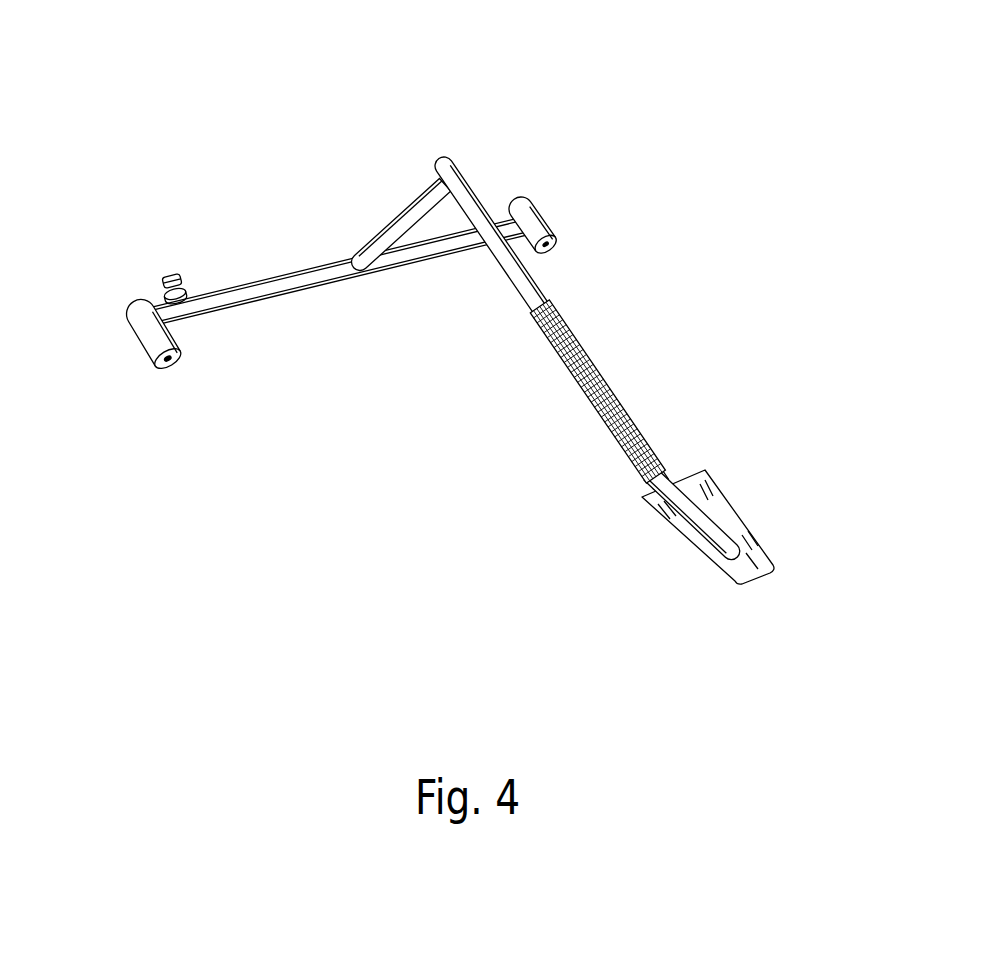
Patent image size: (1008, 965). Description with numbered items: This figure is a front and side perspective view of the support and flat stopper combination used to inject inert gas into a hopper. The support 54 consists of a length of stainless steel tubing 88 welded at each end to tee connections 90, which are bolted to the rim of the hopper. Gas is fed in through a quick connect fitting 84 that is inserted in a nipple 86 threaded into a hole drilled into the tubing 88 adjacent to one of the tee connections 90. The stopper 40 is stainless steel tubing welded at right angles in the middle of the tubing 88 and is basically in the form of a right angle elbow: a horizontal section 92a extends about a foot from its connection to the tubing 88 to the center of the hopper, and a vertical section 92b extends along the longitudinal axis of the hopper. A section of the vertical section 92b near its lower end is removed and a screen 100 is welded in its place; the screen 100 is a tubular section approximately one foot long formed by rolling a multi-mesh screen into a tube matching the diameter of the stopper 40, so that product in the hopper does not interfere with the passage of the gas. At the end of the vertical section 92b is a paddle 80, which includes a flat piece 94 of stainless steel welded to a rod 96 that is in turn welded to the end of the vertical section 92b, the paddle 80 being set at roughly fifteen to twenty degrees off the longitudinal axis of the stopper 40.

The stopper 40 is at (690, 375).
The support 54 is at (334, 240).
The paddle 80 is at (752, 530).
The quick connect fitting 84 is at (172, 278).
The nipple 86 is at (188, 293).
The tubing 88 is at (288, 276).
The tee connections 90 is at (130, 305).
The horizontal section 92a is at (405, 213).
The vertical section 92b is at (472, 177).
The flat piece 94 is at (748, 568).
The rod 96 is at (697, 528).
The screen 100 is at (597, 365).